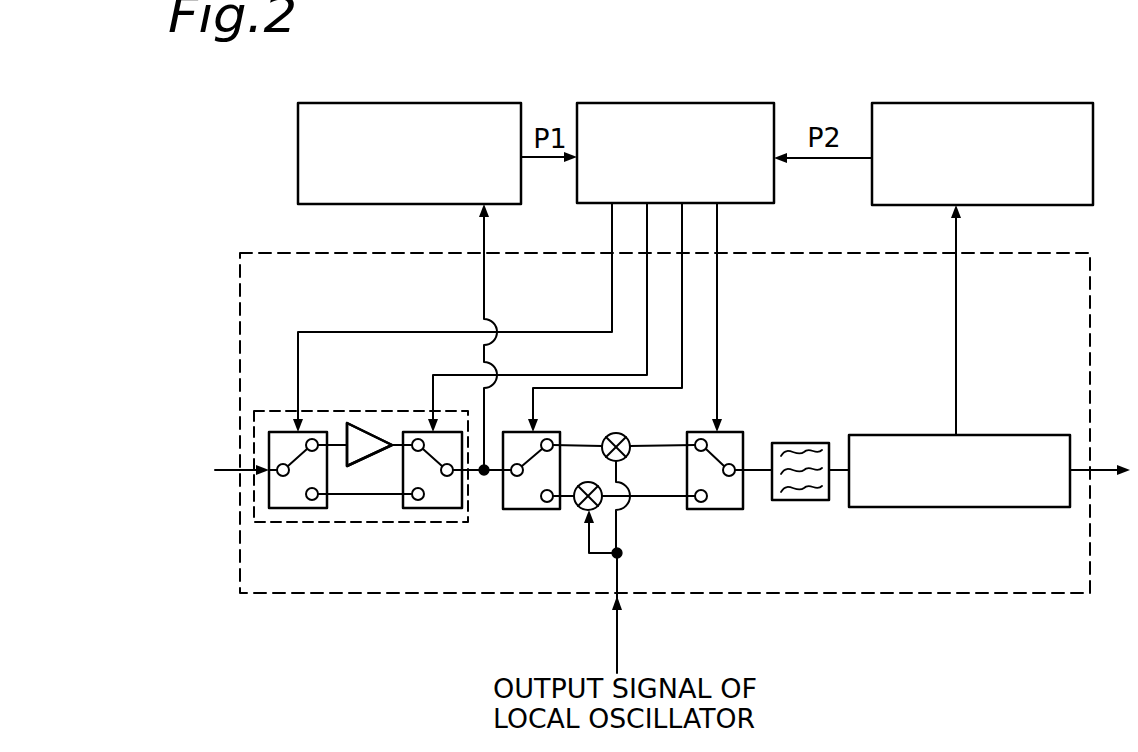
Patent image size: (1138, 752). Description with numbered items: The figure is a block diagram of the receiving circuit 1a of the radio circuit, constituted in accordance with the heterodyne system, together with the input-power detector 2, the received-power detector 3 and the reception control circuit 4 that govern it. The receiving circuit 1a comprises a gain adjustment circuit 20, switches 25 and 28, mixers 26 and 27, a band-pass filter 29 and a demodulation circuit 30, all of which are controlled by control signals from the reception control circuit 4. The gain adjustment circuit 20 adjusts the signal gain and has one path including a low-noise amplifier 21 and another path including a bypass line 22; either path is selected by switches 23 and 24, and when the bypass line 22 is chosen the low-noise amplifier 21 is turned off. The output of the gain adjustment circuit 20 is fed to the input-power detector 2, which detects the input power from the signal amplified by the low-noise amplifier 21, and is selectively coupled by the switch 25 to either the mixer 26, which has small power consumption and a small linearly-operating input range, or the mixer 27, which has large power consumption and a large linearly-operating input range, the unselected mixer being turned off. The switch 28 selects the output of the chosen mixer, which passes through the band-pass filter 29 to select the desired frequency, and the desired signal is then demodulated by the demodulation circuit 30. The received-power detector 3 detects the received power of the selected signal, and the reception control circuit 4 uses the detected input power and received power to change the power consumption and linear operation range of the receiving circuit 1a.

The receiving circuit 1a is at (302, 605).
The input-power detector 2 is at (414, 103).
The received-power detector 3 is at (985, 103).
The reception control circuit 4 is at (719, 103).
The gain adjustment circuit 20 is at (262, 411).
The low-noise amplifier 21 is at (372, 432).
The bypass line 22 is at (365, 494).
The switch 23 is at (297, 508).
The switch 24 is at (430, 508).
The switch 25 is at (497, 509).
The mixer 26 is at (606, 440).
The mixer 27 is at (577, 510).
The switch 28 is at (712, 509).
The band-pass filter 29 is at (796, 500).
The demodulation circuit 30 is at (880, 507).